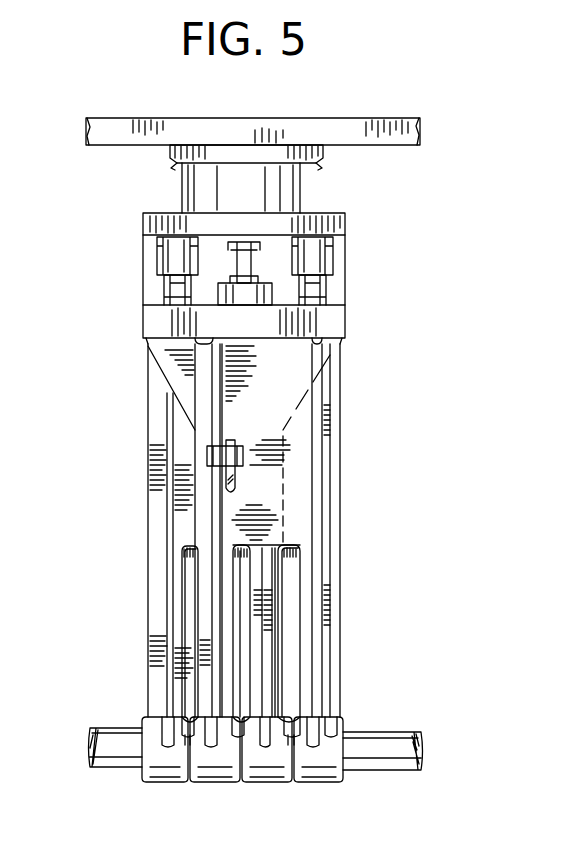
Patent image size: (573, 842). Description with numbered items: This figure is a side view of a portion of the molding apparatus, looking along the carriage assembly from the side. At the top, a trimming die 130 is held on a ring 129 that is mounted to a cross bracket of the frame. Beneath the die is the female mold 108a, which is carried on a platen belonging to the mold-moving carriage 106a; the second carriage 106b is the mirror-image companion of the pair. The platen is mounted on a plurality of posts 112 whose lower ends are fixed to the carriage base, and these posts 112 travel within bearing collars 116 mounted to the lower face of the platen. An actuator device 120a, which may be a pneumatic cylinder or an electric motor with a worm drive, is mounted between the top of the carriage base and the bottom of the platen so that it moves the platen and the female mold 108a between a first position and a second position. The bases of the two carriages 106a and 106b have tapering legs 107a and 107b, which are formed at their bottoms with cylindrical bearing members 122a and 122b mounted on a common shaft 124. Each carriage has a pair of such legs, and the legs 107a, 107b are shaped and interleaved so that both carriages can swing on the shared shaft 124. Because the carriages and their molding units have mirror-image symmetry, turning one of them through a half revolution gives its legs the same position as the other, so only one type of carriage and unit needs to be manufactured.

The ring 129 is at (298, 126).
The trimming die 130 is at (170, 158).
The female mold 108a is at (300, 188).
The bearing collars 116 is at (160, 256).
The posts 112 is at (162, 296).
The actuator device 120a is at (254, 300).
The mold-moving carriage 106a is at (340, 660).
The mold-moving carriage 106b is at (146, 655).
The tapering leg 107a is at (330, 474).
The tapering leg 107b is at (164, 624).
The shaft 124 is at (420, 758).
The cylindrical bearing member 122a is at (225, 778).
The cylindrical bearing member 122b is at (156, 775).